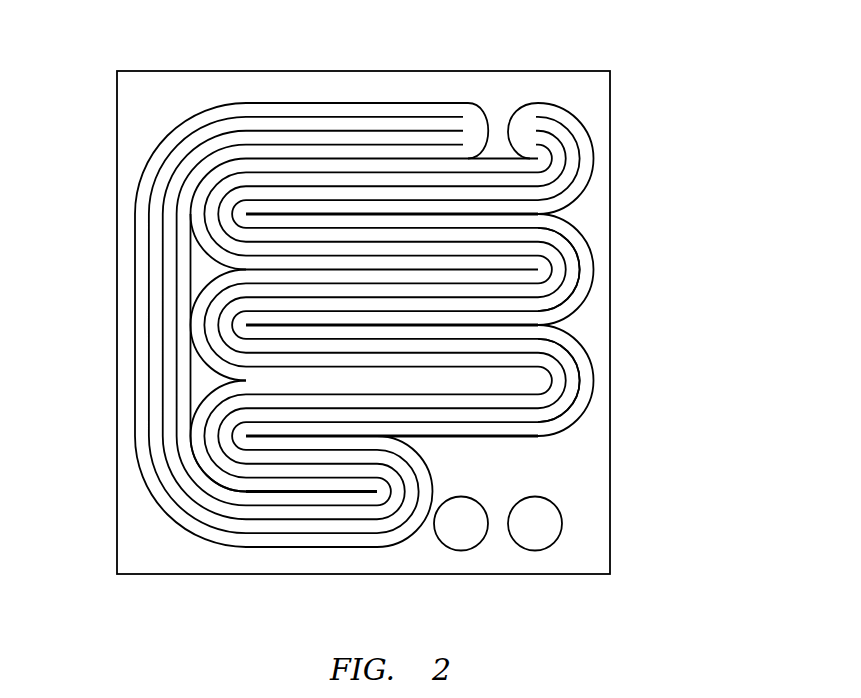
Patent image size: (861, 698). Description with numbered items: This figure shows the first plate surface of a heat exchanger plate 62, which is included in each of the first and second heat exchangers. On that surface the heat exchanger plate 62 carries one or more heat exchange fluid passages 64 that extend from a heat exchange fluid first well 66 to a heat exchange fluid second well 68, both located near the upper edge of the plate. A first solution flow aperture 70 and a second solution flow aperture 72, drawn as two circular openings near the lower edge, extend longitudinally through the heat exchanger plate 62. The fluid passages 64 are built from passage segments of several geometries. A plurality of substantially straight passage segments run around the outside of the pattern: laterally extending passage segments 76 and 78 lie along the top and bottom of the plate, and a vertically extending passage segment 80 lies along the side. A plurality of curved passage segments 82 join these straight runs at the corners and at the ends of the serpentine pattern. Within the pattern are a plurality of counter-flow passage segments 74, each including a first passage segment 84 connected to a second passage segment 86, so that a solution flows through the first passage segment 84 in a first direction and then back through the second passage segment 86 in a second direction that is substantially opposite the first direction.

The heat exchanger plate 62 is at (701, 138).
The heat exchange fluid passages 64 is at (136, 297).
The heat exchange fluid first well 66 is at (482, 103).
The heat exchange fluid second well 68 is at (517, 104).
The first solution flow aperture 70 is at (461, 550).
The second solution flow aperture 72 is at (535, 550).
The counter-flow passage segments 74 is at (582, 216).
The laterally extending passage segment 76 is at (333, 103).
The laterally extending passage segment 78 is at (300, 547).
The vertically extending passage segment 80 is at (135, 237).
The curved passage segments 82 is at (163, 142).
The first passage segment 84 is at (508, 310).
The second passage segment 86 is at (508, 343).